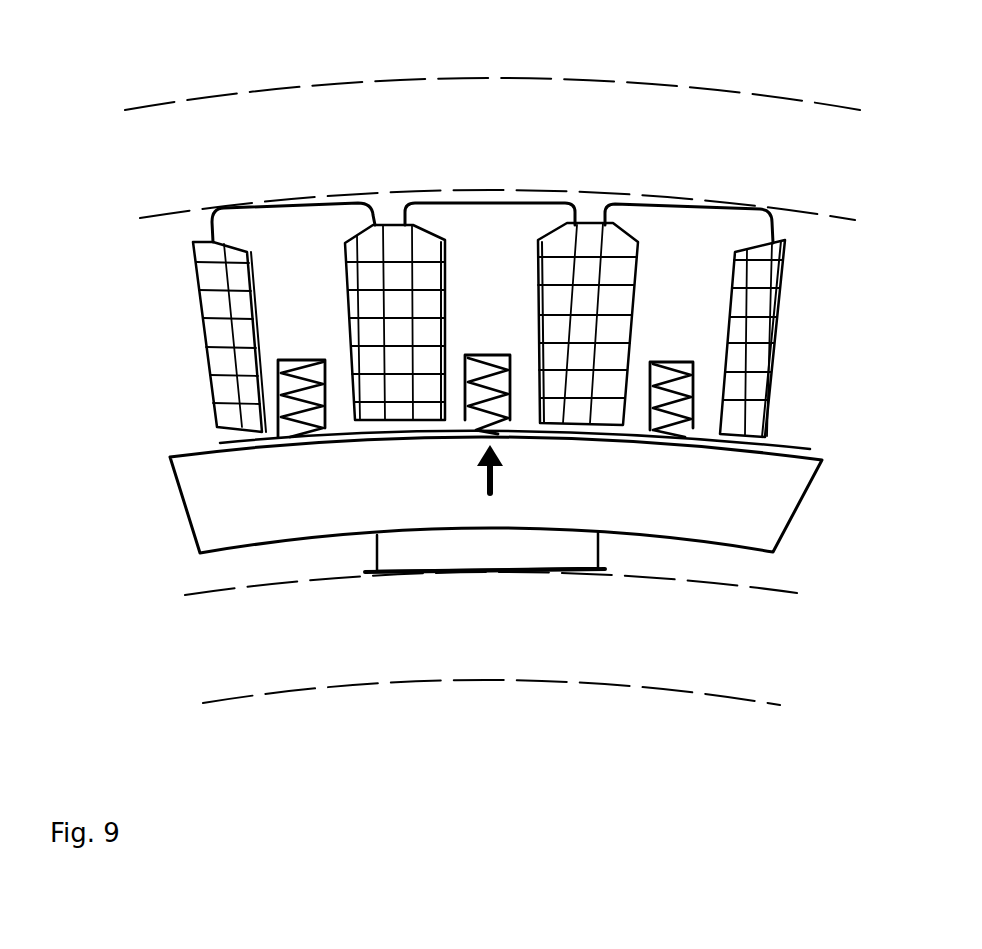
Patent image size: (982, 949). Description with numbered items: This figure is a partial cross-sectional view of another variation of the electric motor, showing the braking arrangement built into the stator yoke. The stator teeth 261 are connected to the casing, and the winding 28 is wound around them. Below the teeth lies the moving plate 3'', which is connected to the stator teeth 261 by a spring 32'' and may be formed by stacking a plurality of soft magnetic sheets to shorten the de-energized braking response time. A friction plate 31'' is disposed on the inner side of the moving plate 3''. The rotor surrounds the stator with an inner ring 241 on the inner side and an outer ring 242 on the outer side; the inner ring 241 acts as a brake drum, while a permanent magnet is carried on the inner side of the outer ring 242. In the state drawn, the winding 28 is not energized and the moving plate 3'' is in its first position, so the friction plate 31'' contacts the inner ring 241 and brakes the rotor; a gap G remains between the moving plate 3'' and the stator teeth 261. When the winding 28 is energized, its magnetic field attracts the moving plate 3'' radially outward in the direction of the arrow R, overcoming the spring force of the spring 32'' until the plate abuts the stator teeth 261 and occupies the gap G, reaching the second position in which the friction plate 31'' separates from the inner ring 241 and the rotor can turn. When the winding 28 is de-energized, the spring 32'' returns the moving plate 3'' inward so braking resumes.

The outer ring 242 is at (370, 160).
The winding 28 is at (388, 277).
The stator teeth 261 is at (483, 240).
The spring 32'' is at (292, 341).
The gap G is at (258, 437).
The arrow R is at (503, 472).
The moving plate 3'' is at (443, 514).
The friction plate 31'' is at (442, 596).
The inner ring 241 is at (522, 630).